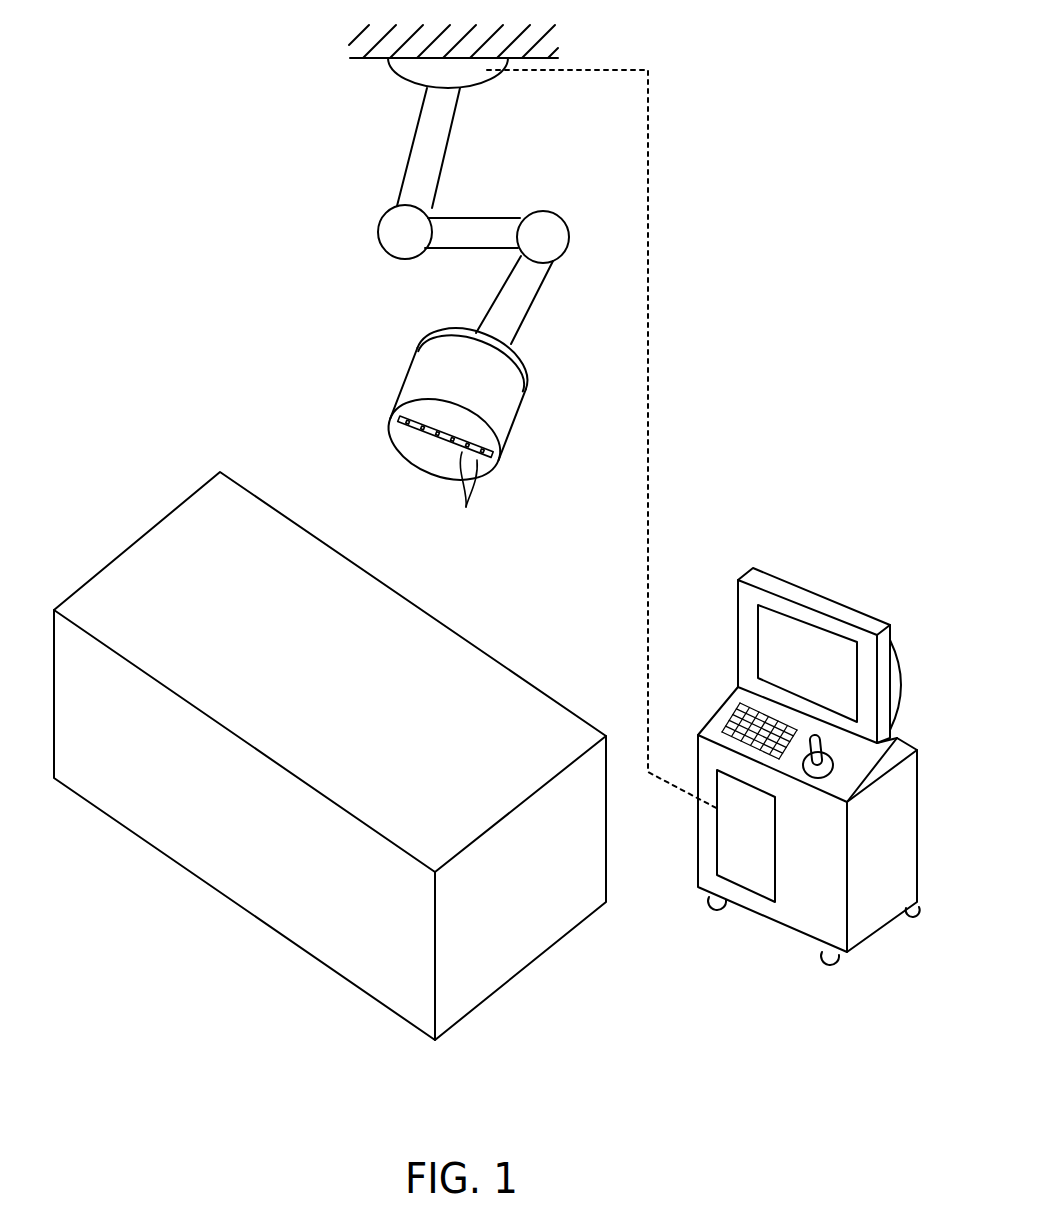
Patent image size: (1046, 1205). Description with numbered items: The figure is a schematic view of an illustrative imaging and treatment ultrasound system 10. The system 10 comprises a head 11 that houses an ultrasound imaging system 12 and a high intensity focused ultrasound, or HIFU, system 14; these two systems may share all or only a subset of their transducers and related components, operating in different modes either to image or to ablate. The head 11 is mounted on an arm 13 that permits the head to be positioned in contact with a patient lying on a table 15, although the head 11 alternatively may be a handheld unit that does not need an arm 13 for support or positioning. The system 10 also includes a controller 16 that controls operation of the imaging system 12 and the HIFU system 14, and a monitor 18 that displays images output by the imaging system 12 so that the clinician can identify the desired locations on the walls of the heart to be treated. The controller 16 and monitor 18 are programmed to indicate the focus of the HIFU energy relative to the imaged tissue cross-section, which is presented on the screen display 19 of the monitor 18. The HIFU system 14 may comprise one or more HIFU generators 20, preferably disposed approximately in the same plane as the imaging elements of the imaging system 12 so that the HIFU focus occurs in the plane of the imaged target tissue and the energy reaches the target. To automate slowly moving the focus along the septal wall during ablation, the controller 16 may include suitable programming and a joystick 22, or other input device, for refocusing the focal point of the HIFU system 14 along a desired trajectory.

The system 10 is at (696, 366).
The head 11 is at (417, 363).
The ultrasound imaging system 12 is at (447, 430).
The arm 13 is at (433, 152).
The high intensity focused ultrasound (HIFU) system 14 is at (476, 496).
The table 15 is at (349, 699).
The controller 16 is at (728, 840).
The monitor 18 is at (815, 605).
The screen display 19 is at (823, 680).
The HIFU generator 20 is at (415, 428).
The joystick 22 is at (807, 775).